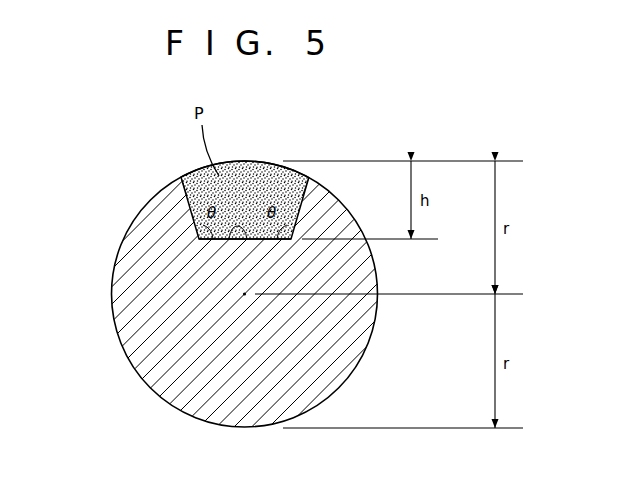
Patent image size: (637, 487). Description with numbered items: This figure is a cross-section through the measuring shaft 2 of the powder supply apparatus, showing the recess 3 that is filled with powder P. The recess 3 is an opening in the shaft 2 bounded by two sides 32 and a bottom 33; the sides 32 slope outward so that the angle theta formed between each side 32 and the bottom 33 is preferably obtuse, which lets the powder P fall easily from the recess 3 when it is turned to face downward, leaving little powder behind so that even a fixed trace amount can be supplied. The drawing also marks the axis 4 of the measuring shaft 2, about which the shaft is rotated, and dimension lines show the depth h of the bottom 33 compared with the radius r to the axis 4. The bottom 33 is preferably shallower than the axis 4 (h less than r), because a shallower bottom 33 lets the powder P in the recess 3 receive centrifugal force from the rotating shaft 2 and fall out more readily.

The measuring shaft 2 is at (104, 366).
The recess 3 is at (250, 184).
The axis 4 is at (244, 294).
The side 32 is at (199, 168).
The bottom 33 is at (237, 239).